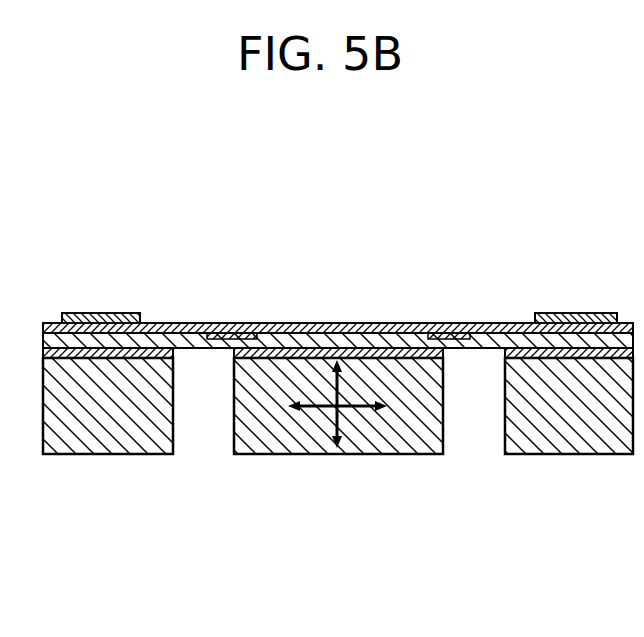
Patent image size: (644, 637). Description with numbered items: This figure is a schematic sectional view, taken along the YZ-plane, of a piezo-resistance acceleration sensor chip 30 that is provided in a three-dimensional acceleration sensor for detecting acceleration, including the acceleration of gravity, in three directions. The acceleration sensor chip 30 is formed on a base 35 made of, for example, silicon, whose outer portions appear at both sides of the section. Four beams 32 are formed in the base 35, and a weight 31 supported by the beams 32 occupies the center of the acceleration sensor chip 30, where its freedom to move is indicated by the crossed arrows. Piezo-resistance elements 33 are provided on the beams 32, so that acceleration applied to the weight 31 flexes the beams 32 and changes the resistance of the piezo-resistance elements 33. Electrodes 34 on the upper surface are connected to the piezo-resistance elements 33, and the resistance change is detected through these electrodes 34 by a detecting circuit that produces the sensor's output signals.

The acceleration sensor chip 30 is at (338, 349).
The weight 31 is at (280, 445).
The beams 32 is at (188, 342).
The piezo-resistance elements 33 is at (227, 325).
The electrodes 34 is at (107, 314).
The base 35 is at (115, 445).